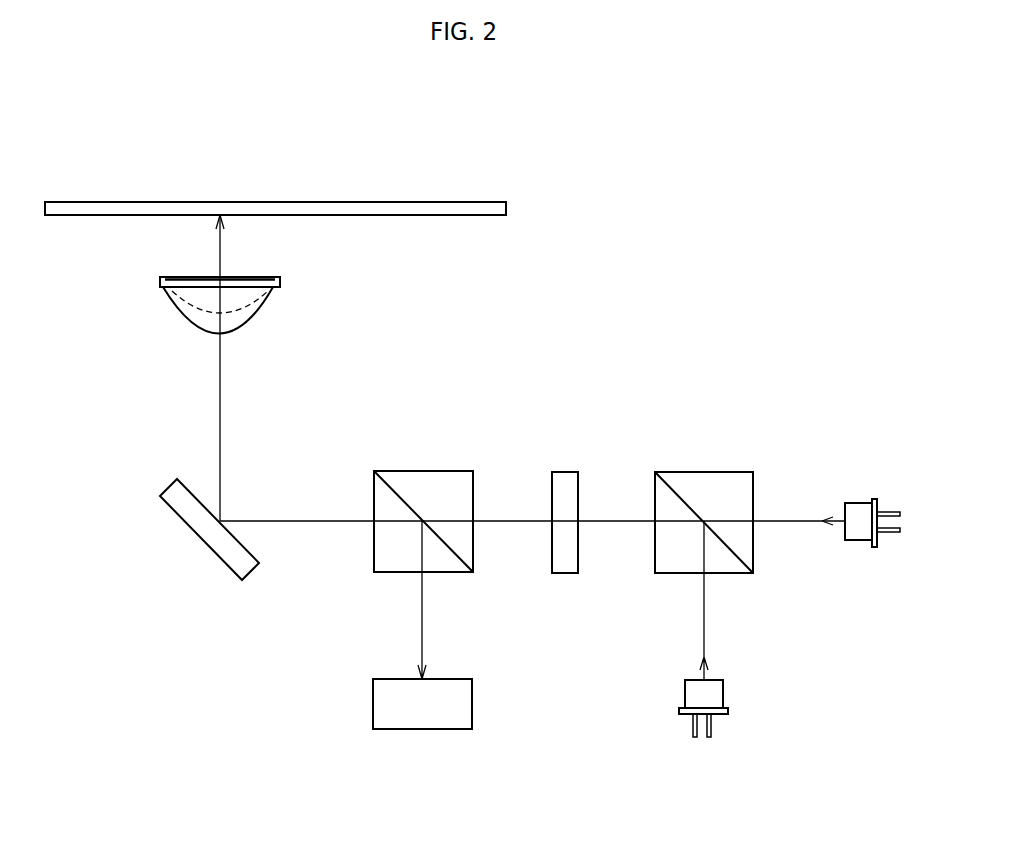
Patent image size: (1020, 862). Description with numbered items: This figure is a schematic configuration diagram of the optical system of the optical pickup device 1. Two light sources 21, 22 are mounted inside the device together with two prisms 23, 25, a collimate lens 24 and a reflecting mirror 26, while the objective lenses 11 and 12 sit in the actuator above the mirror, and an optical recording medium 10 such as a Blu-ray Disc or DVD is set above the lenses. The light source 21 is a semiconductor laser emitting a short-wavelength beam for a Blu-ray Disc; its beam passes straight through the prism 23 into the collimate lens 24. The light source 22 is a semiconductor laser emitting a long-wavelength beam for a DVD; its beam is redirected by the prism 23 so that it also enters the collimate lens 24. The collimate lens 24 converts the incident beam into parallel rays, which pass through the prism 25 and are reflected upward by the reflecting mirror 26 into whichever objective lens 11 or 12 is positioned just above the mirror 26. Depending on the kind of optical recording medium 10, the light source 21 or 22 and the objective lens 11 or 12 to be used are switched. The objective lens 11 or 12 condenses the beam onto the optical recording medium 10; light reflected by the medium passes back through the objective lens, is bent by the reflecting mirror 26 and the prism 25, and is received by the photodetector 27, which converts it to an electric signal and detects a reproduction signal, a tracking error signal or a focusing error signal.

The optical pickup device 1 is at (727, 275).
The optical recording medium 10 is at (447, 202).
The objective lens 11 is at (238, 327).
The objective lens 12 is at (250, 303).
The light source 21 is at (859, 503).
The light source 22 is at (723, 695).
The prism 23 is at (705, 471).
The collimate lens 24 is at (566, 471).
The prism 25 is at (425, 470).
The reflecting mirror 26 is at (198, 538).
The photodetector 27 is at (472, 708).